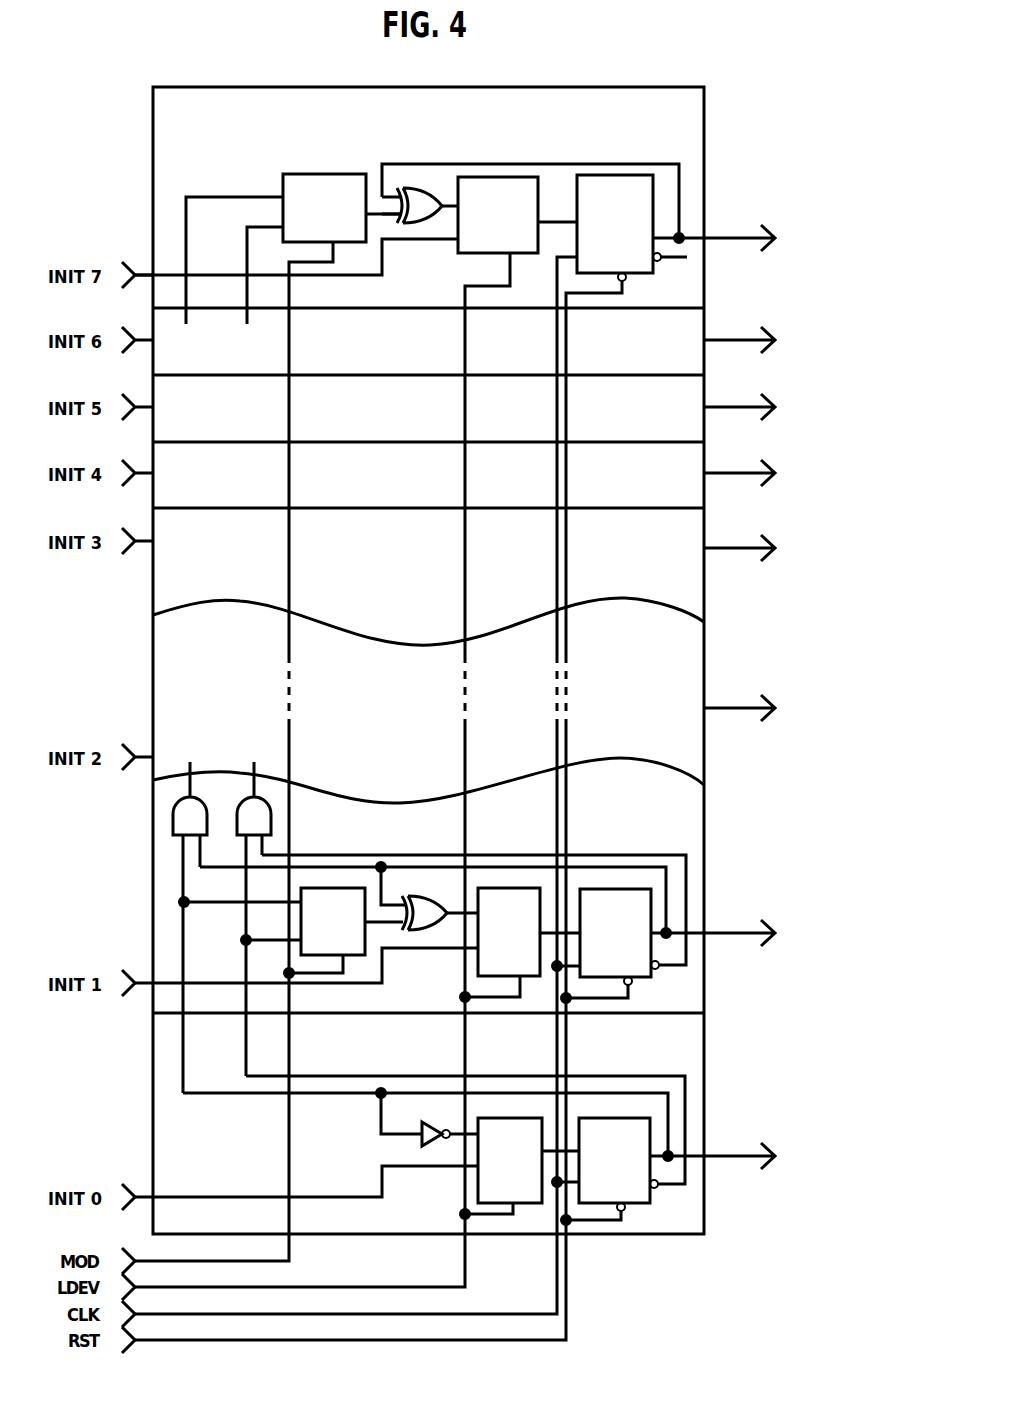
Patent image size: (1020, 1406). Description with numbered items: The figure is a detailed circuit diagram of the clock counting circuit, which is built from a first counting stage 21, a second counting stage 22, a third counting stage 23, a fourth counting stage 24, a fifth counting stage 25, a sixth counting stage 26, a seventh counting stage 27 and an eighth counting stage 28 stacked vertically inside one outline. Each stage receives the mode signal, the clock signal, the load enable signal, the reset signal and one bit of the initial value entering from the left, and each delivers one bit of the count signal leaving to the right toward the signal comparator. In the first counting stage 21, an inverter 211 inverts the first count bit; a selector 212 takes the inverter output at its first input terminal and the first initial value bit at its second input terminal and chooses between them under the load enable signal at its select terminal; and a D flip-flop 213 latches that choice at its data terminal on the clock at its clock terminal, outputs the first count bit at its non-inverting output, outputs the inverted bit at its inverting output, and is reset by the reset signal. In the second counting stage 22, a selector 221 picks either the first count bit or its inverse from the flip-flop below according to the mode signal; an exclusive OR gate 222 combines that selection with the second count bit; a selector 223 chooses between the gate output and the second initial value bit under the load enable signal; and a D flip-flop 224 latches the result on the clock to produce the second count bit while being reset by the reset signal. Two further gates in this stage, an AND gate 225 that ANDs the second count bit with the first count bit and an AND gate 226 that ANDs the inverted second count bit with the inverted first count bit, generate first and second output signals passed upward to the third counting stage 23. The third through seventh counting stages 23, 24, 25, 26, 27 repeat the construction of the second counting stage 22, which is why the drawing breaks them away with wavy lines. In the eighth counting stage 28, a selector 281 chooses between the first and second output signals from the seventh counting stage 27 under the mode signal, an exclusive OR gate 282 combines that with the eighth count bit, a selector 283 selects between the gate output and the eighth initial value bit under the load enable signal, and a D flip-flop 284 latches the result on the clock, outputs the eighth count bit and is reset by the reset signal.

The first counting stage 21 is at (478, 1128).
The second counting stage 22 is at (478, 918).
The third counting stage 23 is at (705, 648).
The fourth counting stage 24 is at (694, 530).
The fifth counting stage 25 is at (694, 458).
The sixth counting stage 26 is at (694, 392).
The seventh counting stage 27 is at (694, 322).
The eighth counting stage 28 is at (478, 226).
The inverter 211 is at (437, 1121).
The selector 212 is at (512, 1118).
The D flip-flop 213 is at (617, 1118).
The selector 221 is at (336, 893).
The exclusive OR gate 222 is at (423, 896).
The selector 223 is at (503, 890).
The D flip-flop 224 is at (612, 892).
The AND gate 225 is at (200, 800).
The AND gate 226 is at (261, 805).
The selector 281 is at (316, 176).
The exclusive OR gate 282 is at (419, 186).
The selector 283 is at (492, 178).
The D flip-flop 284 is at (614, 176).